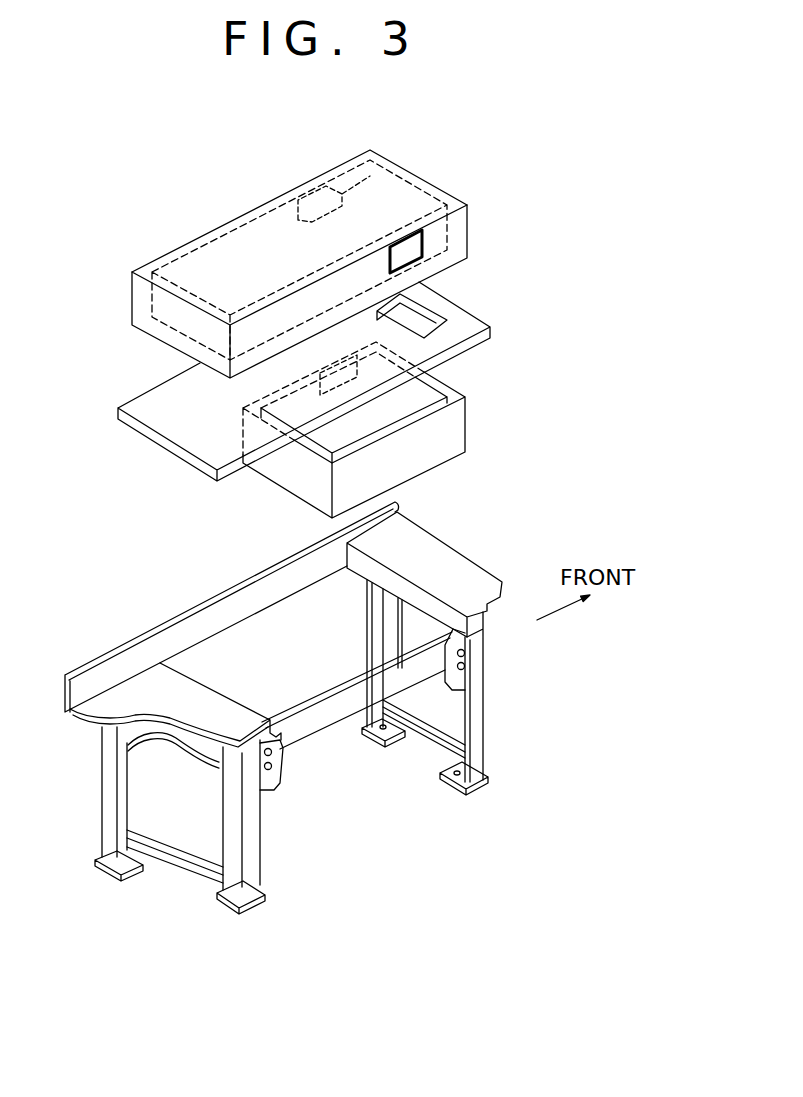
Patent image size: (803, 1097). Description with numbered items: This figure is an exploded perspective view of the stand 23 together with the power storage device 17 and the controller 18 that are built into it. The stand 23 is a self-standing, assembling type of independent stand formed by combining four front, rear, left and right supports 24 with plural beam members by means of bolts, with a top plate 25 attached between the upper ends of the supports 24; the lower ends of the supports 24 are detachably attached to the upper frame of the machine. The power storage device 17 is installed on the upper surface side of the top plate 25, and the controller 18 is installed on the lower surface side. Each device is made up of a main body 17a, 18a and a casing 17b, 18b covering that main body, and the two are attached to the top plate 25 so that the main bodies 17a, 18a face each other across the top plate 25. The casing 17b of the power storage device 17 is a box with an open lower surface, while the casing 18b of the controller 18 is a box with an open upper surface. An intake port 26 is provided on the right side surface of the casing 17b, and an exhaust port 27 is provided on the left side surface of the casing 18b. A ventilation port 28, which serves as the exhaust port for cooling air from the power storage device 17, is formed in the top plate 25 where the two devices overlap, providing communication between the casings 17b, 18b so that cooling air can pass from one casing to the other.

The power storage device 17 is at (299, 251).
The main body 17a is at (299, 260).
The casing 17b is at (275, 196).
The controller 18 is at (393, 440).
The main body 18a is at (407, 400).
The casing 18b is at (400, 470).
The stand 23 is at (178, 603).
The supports 24 is at (363, 635).
The top plate 25 is at (133, 397).
The intake port 26 is at (400, 257).
The exhaust port 27 is at (405, 159).
The ventilation port 28 is at (432, 322).